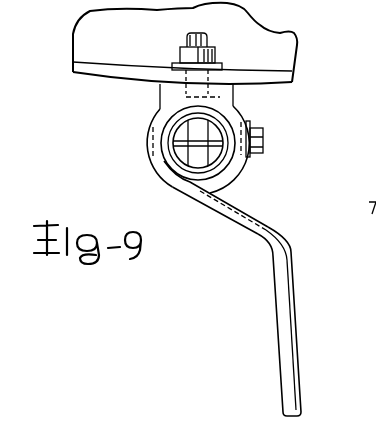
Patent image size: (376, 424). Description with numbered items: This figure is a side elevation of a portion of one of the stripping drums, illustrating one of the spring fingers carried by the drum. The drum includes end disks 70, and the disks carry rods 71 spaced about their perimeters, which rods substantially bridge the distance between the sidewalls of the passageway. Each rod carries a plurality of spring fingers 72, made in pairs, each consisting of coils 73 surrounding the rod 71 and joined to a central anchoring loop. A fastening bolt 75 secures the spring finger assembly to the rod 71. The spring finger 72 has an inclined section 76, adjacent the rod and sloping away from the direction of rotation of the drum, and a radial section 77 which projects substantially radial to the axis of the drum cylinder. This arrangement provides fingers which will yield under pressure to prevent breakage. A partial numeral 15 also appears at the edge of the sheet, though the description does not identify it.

The end disk 70 is at (297, 37).
The rod 71 is at (218, 125).
The spring finger 72 is at (289, 226).
The coil 73 is at (230, 175).
The fastening bolt 75 is at (263, 133).
The inclined section 76 is at (231, 218).
The radial section 77 is at (294, 346).
The partial numeral 15 is at (341, 419).